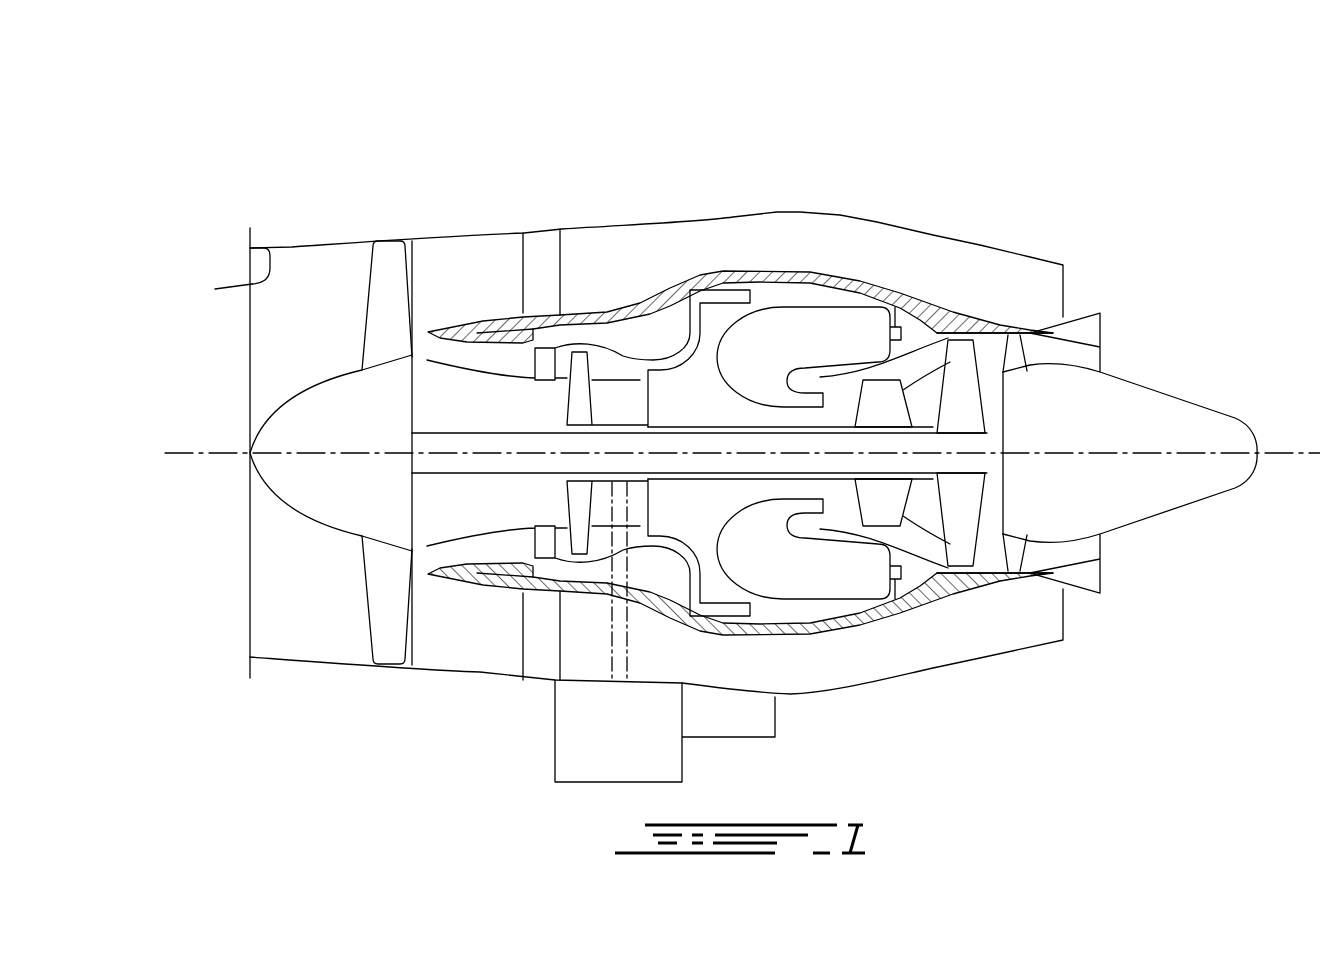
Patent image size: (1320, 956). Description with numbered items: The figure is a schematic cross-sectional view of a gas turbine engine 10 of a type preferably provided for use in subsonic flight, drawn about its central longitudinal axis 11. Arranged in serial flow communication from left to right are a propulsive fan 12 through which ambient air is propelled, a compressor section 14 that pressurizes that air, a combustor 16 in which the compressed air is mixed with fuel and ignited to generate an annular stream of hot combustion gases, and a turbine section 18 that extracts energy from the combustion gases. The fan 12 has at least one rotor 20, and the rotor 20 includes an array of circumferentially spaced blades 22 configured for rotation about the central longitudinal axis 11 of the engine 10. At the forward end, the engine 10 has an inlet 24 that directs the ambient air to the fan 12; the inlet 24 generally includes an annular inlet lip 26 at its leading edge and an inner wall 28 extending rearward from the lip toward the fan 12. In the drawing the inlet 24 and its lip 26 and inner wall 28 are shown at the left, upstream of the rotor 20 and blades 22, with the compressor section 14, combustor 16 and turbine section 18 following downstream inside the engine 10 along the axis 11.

The gas turbine engine 10 is at (944, 148).
The central longitudinal axis 11 is at (1290, 452).
The propulsive fan 12 is at (372, 592).
The compressor section 14 is at (610, 363).
The combustor 16 is at (797, 327).
The turbine section 18 is at (920, 513).
The rotor 20 is at (388, 262).
The blades 22 is at (395, 290).
The inlet 24 is at (292, 236).
The annular inlet lip 26 is at (250, 248).
The inner wall 28 is at (215, 289).